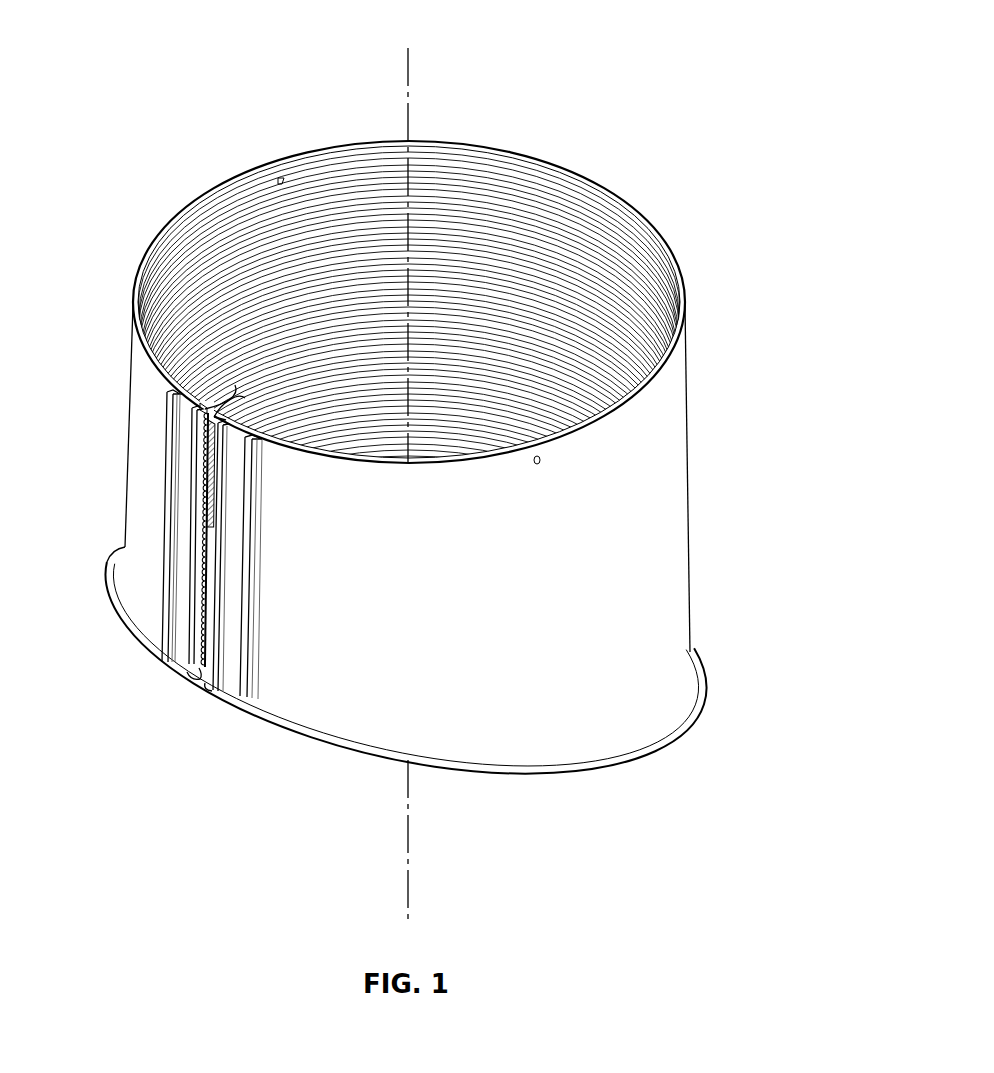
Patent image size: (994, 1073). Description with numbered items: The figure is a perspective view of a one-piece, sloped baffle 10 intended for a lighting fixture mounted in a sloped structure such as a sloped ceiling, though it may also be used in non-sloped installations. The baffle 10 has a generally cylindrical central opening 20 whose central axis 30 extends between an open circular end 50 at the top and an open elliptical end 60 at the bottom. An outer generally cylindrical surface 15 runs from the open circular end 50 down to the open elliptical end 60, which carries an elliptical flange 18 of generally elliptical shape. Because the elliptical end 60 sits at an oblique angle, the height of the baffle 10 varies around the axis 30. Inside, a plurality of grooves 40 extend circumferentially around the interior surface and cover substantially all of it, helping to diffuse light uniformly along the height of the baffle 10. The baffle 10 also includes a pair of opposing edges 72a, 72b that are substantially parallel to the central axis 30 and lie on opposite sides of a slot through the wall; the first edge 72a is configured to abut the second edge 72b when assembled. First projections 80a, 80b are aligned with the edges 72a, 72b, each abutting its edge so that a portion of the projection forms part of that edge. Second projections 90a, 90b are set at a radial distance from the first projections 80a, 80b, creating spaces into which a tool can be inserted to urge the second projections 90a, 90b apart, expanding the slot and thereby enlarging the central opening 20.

The one-piece, sloped baffle 10 is at (692, 46).
The outer generally cylindrical surface 15 is at (488, 659).
The elliptical flange 18 is at (700, 695).
The generally cylindrical central opening 20 is at (234, 297).
The central axis 30 is at (408, 70).
The plurality of grooves 40 is at (246, 226).
The open circular end 50 is at (175, 217).
The open elliptical end 60 is at (160, 668).
The first edge 72a is at (235, 385).
The second edge 72b is at (245, 398).
The first one of the first projections 80a is at (192, 490).
The second one of the first projections 80b is at (228, 593).
The first one of the second projections 90a is at (168, 442).
The second one of the second projections 90b is at (248, 549).